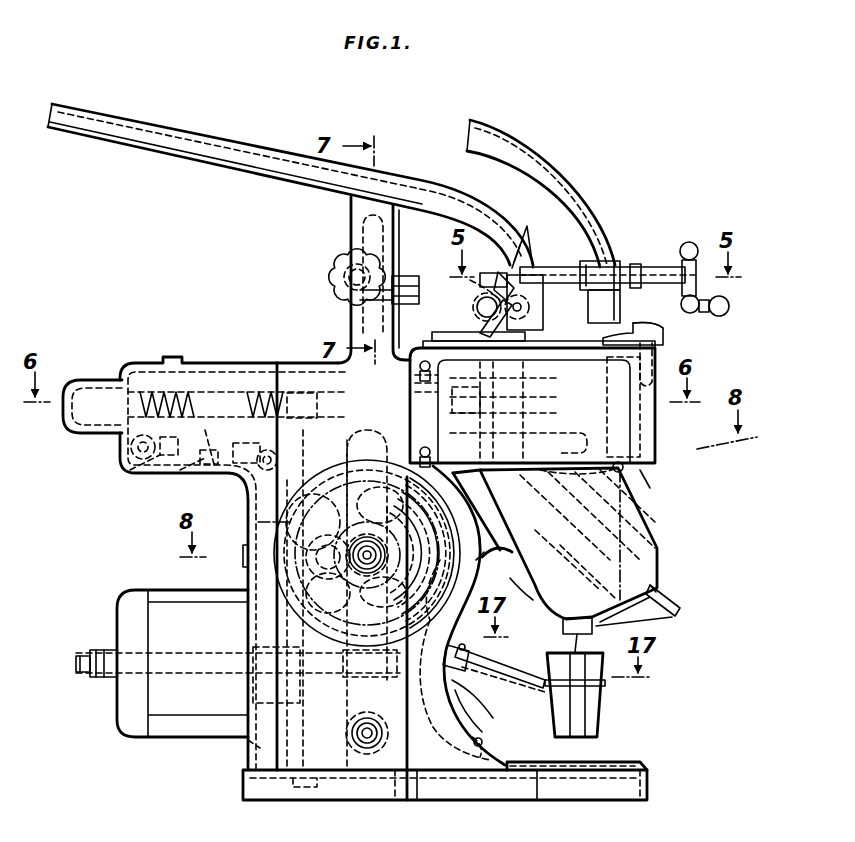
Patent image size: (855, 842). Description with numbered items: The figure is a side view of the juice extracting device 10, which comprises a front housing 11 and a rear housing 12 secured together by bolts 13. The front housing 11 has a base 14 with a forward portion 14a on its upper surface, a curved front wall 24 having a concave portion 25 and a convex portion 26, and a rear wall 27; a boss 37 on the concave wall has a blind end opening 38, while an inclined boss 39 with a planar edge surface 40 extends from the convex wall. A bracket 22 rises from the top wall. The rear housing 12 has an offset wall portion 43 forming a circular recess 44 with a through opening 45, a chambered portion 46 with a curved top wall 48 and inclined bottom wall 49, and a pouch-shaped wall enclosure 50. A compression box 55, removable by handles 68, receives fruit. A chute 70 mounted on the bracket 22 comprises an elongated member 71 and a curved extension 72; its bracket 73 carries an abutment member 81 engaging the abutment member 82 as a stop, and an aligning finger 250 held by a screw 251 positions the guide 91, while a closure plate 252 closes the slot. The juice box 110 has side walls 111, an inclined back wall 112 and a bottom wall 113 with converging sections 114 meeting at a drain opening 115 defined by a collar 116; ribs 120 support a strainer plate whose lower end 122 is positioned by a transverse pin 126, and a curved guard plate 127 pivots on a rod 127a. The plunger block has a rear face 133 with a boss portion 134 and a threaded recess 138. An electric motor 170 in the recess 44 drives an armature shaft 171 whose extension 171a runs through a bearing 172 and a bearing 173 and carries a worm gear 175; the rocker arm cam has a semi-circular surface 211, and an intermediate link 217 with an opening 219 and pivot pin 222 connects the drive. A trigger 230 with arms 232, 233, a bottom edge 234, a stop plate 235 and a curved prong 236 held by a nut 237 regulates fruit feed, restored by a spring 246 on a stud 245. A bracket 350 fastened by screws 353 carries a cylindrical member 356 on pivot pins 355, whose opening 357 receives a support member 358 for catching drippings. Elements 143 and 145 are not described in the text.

The juice extracting device 10 is at (603, 189).
The front housing 11 is at (462, 643).
The rear housing 12 is at (155, 340).
The bolts 13 is at (247, 585).
The base 14 is at (265, 787).
The forward portion of base 14a is at (620, 768).
The bracket 22 is at (352, 318).
The curved front wall 24 is at (493, 750).
The concave portion 25 is at (470, 743).
The convex portion 26 is at (491, 565).
The wall 27 is at (289, 556).
The boss 37 is at (478, 700).
The blind end opening 38 is at (425, 648).
The inclined boss 39 is at (492, 543).
The outer planar edge surface 40 is at (443, 470).
The offset wall portion 43 is at (250, 700).
The circular recess 44 is at (248, 742).
The through opening 45 is at (245, 678).
The chambered portion 46 is at (133, 476).
The curved top wall 48 is at (262, 347).
The bottom wall 49 is at (180, 480).
The wall enclosure 50 is at (80, 383).
The compression box 55 is at (656, 360).
The handles 68 is at (410, 395).
The chute 70 is at (177, 120).
The elongated member 71 is at (152, 158).
The curved extension 72 is at (624, 282).
The bracket 73 is at (350, 215).
The abutment member 81 is at (395, 283).
The abutment member 82 is at (390, 297).
The guide 91 is at (612, 231).
The juice box 110 is at (662, 550).
The side wall 111 is at (585, 623).
The inclined back wall 112 is at (532, 573).
The bottom wall 113 is at (666, 617).
The bottom wall sections 114 is at (640, 590).
The drain opening 115 is at (573, 617).
The collar 116 is at (583, 637).
The ribs 120 is at (648, 540).
The lower end of strainer plate 122 is at (672, 600).
The transverse pin 126 is at (662, 588).
The curved guard plate 127 is at (625, 505).
The rod 127a is at (628, 470).
The rear face 133 is at (415, 452).
The boss portion 134 is at (490, 392).
The vertical threaded recess 138 is at (492, 381).
The link 143 is at (600, 472).
The stop 145 is at (580, 440).
The electric motor 170 is at (131, 593).
The armature shaft 171 is at (82, 660).
The shaft extension 171a is at (322, 770).
The bearing 172 is at (240, 650).
The bearing 173 is at (410, 606).
The worm gear 175 is at (402, 780).
The semi-circular surface 211 is at (250, 550).
The intermediate link 217 is at (193, 433).
The opening 219 is at (125, 443).
The pivot pin 222 is at (135, 465).
The trigger 230 is at (540, 315).
The upwardly extending arm 232 is at (524, 262).
The downwardly and rearwardly extending arm 233 is at (476, 305).
The horizontal bottom edge 234 is at (527, 337).
The stop plate 235 is at (478, 333).
The curved prong 236 is at (522, 298).
The nut 237 is at (506, 286).
The stud 245 is at (478, 285).
The spring 246 is at (516, 262).
The aligning finger 250 is at (665, 328).
The screw 251 is at (647, 324).
The closure plate 252 is at (643, 455).
The bracket 350 is at (478, 726).
The screws 353 is at (367, 718).
The pivot pins 355 is at (492, 710).
The cylindrical member 356 is at (470, 657).
The transverse through opening 357 is at (490, 687).
The support member 358 is at (519, 668).